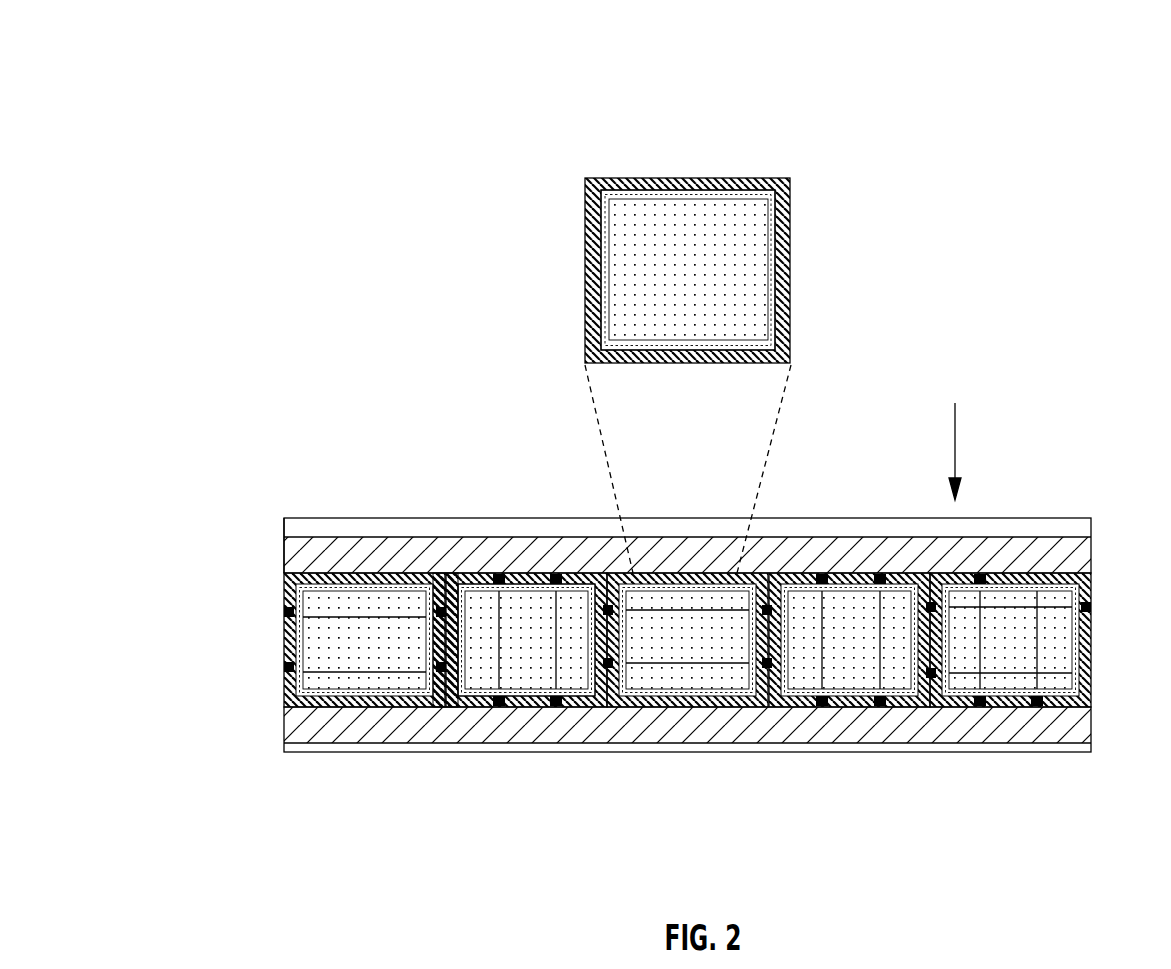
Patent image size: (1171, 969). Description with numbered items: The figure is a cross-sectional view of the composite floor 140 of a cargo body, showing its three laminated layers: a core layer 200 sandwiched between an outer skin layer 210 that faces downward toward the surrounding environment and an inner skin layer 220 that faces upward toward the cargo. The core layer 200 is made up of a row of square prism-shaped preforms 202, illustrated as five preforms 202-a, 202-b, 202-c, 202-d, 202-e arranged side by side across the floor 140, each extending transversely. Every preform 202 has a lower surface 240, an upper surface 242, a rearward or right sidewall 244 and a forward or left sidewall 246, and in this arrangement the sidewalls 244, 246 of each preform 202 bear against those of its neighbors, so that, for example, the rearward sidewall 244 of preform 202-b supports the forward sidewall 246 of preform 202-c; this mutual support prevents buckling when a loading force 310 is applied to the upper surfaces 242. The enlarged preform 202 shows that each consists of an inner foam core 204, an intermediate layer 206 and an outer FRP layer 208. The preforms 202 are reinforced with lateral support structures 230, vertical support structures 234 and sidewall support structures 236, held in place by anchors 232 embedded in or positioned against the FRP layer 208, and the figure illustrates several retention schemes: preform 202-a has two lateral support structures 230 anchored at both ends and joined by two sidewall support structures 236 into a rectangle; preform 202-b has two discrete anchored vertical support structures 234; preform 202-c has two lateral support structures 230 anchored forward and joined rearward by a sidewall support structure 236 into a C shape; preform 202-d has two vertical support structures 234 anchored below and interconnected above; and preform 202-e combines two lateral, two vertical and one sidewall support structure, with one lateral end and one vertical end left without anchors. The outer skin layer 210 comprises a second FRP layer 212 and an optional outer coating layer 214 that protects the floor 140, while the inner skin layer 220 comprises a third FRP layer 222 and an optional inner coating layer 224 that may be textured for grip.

The floor 140 is at (667, 631).
The core layer 200 is at (665, 638).
The preform 202 is at (691, 303).
The reinforced preform 202-a is at (367, 638).
The reinforced preform 202-b is at (520, 638).
The reinforced preform 202-c is at (668, 688).
The reinforced preform 202-d is at (900, 686).
The reinforced preform 202-e is at (1061, 689).
The inner foam core 204 is at (752, 236).
The intermediate layer 206 is at (777, 258).
The outer FRP layer 208 is at (691, 270).
The outer skin layer 210 is at (644, 781).
The FRP layer 212 is at (330, 743).
The outer coating layer 214 is at (372, 753).
The inner skin layer 220 is at (644, 493).
The FRP layer 222 is at (283, 550).
The inner coating layer 224 is at (328, 518).
The lateral support structure 230 is at (385, 617).
The anchor 232 is at (441, 590).
The vertical support structure 234 is at (463, 587).
The sidewall support structure 236 is at (498, 605).
The lower surface 240 is at (678, 378).
The upper surface 242 is at (693, 162).
The rearward sidewall 244 is at (806, 331).
The forward sidewall 246 is at (568, 275).
The loading force 310 is at (957, 412).